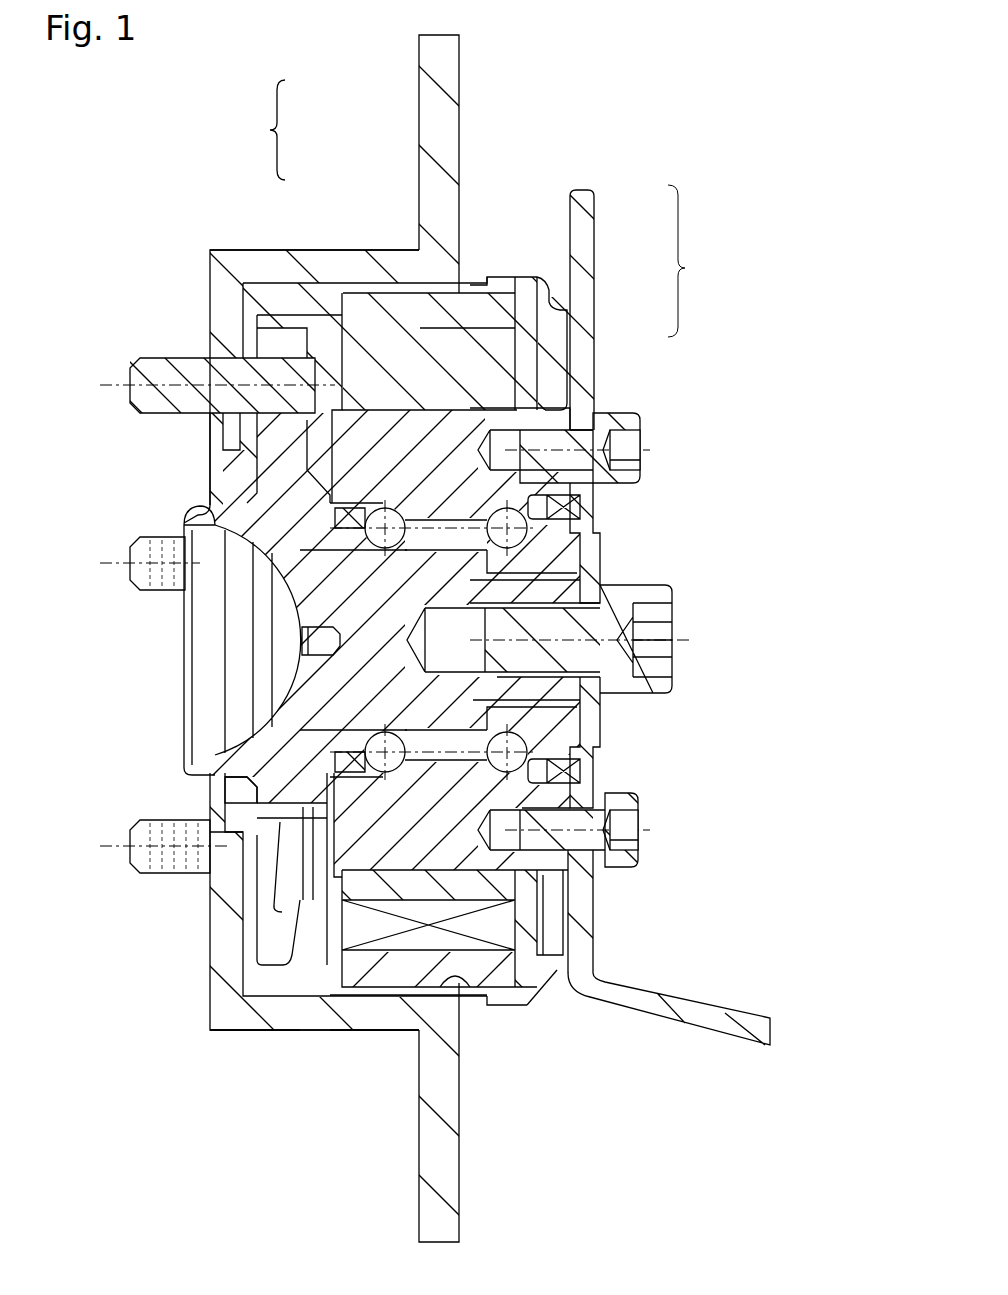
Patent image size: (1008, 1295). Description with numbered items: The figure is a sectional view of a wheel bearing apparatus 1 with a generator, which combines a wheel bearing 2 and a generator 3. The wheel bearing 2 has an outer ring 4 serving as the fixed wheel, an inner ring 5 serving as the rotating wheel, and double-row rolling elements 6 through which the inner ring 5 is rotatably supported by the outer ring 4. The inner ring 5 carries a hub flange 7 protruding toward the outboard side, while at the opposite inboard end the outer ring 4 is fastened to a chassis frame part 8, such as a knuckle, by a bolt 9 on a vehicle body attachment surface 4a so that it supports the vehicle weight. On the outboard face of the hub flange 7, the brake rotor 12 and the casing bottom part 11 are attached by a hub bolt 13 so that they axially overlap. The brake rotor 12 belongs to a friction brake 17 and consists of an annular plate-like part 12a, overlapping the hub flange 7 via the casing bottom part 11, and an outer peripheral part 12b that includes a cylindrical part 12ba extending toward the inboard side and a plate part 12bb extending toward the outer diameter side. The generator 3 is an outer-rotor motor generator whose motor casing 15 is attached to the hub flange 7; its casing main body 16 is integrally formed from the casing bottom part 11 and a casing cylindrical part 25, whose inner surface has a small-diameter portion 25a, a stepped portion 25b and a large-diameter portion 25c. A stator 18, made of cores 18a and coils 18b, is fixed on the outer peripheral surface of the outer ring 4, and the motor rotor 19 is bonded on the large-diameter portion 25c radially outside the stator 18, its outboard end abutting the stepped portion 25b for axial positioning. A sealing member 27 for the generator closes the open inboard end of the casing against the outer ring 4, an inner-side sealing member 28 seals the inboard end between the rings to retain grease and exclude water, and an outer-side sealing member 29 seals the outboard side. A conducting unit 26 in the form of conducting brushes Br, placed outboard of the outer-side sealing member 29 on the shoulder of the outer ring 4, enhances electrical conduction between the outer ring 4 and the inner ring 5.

The wheel bearing apparatus with a generator 1 is at (129, 165).
The wheel bearing 2 is at (158, 631).
The generator 3 is at (564, 307).
The outer ring 4 is at (520, 483).
The vehicle body attachment surface 4a is at (597, 860).
The inner ring 5 is at (317, 613).
The double-row rolling elements 6 is at (447, 553).
The hub flange 7 is at (267, 348).
The chassis frame part 8 is at (727, 1017).
The bolt 9 is at (627, 413).
The casing bottom part 11 is at (255, 885).
The brake rotor 12 is at (215, 98).
The plate-like part 12a is at (227, 317).
The outer peripheral part 12b is at (334, 269).
The cylindrical part 12ba is at (343, 267).
The plate part 12bb is at (430, 130).
The hub bolt 13 is at (130, 380).
The motor casing 15 is at (470, 277).
The casing main body 16 is at (240, 980).
The brake 17 is at (474, 1092).
The stator 18 is at (493, 368).
The cores 18a is at (503, 885).
The coils 18b is at (503, 927).
The motor rotor 19 is at (487, 312).
The casing cylindrical part 25 is at (303, 1030).
The small-diameter portion 25a is at (238, 1030).
The stepped portion 25b is at (385, 1032).
The large-diameter portion 25c is at (480, 1003).
The conducting unit 26 is at (240, 780).
The sealing member for a generator 27 is at (553, 975).
The inner-side sealing member 28 is at (590, 513).
The outer-side sealing member 29 is at (353, 532).
The conducting brushes Br is at (338, 752).